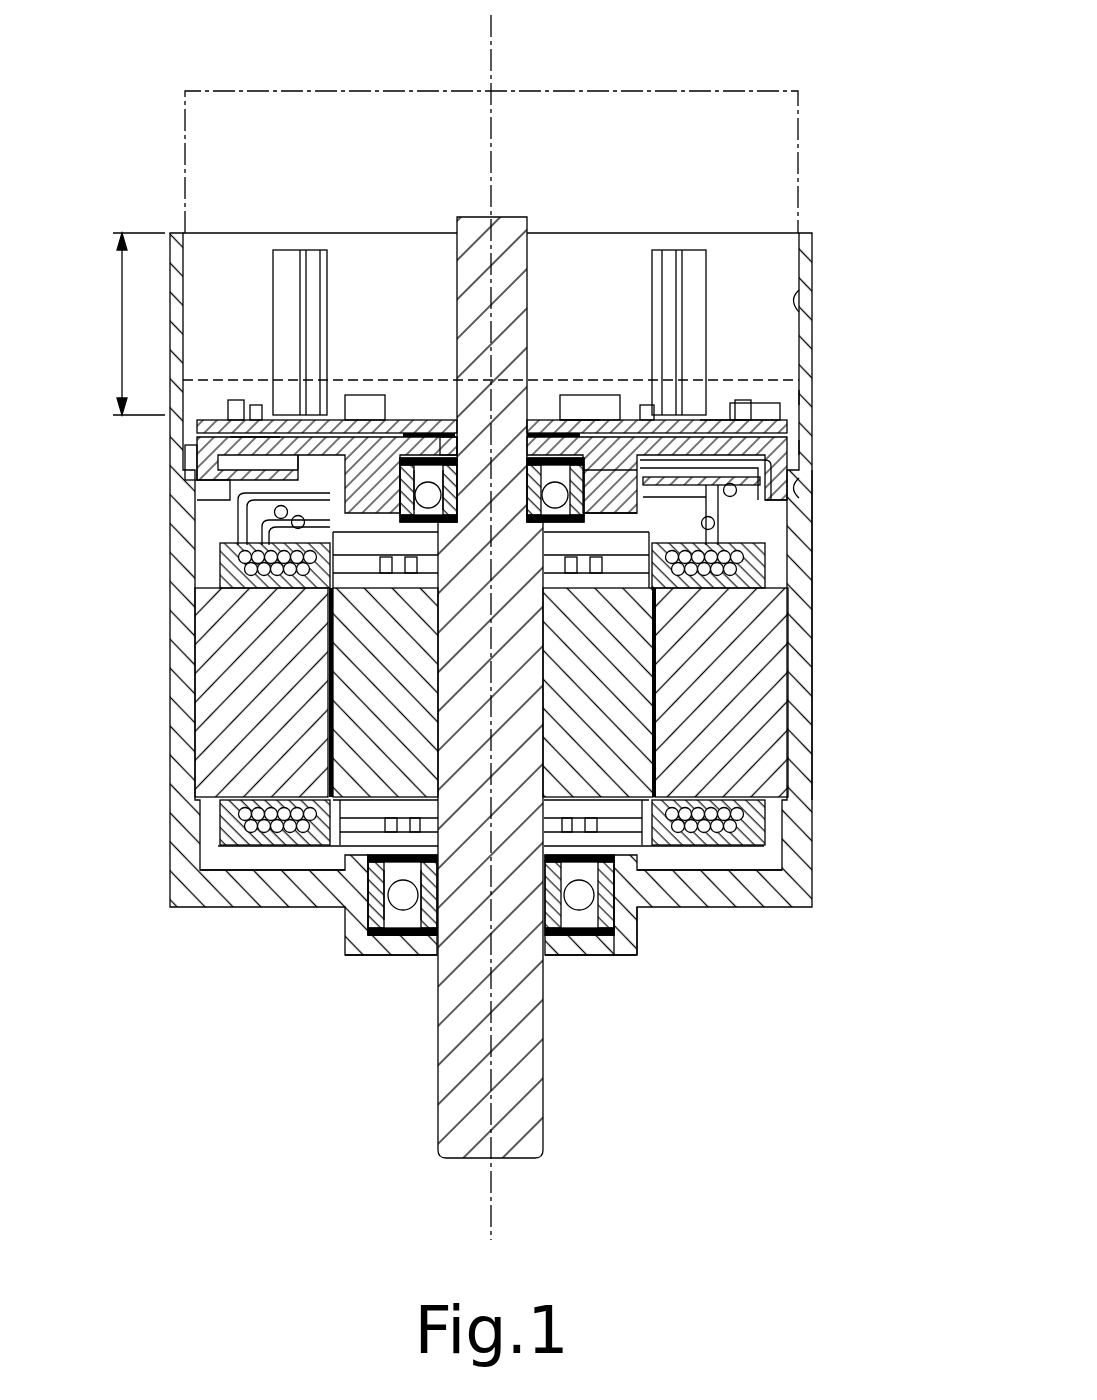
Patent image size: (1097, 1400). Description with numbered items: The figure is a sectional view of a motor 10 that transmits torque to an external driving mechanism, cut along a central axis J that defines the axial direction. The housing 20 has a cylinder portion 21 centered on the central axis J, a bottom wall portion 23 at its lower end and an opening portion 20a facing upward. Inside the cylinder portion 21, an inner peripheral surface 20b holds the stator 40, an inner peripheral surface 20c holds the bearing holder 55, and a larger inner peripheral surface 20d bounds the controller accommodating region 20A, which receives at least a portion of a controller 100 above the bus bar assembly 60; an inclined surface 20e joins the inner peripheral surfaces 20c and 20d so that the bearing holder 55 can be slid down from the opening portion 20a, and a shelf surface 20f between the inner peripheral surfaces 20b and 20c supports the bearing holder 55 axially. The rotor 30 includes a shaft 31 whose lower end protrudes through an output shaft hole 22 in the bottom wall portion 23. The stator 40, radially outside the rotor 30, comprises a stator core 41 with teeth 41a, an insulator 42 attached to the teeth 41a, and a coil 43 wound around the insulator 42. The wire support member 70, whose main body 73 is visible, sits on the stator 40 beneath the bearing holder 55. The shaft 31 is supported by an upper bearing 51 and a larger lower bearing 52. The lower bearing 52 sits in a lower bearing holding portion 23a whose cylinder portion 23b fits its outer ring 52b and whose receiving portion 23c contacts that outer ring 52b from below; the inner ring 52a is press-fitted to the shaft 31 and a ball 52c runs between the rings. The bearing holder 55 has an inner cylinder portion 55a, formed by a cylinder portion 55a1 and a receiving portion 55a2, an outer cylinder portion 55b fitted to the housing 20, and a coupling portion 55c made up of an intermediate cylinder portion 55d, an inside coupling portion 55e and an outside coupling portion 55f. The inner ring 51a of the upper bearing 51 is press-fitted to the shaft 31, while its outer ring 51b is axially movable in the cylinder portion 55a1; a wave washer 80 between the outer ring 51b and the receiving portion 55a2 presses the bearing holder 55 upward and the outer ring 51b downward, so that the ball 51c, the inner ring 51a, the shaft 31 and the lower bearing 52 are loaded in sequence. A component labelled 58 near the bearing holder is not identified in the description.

The central axis J is at (497, 50).
The controller 100 is at (745, 91).
The motor 10 is at (500, 637).
The housing 20 is at (548, 591).
The controller accommodating region 20A is at (115, 324).
The opening portion 20a is at (218, 233).
The inner peripheral surface 20b is at (790, 700).
The inner peripheral surface 20c is at (800, 448).
The inner peripheral surface 20d is at (802, 300).
The inclined surface 20e is at (806, 400).
The shelf surface 20f is at (800, 488).
The cylinder portion 21 is at (800, 640).
The output shaft hole 22 is at (405, 940).
The bottom wall portion 23 is at (760, 910).
The lower bearing holding portion 23a is at (650, 945).
The cylinder portion 23b is at (635, 920).
The receiving portion 23c is at (605, 925).
The rotor 30 is at (655, 705).
The shaft 31 is at (456, 268).
The stator 40 is at (488, 685).
The stator core 41 is at (210, 625).
The teeth 41a is at (300, 690).
The insulator 42 is at (240, 562).
The coil 43 is at (225, 550).
The upper bearing 51 is at (492, 453).
The inner ring 51a is at (450, 495).
The outer ring 51b is at (430, 540).
The ball 51c is at (448, 462).
The lower bearing 52 is at (432, 955).
The inner ring 52a is at (440, 935).
The outer ring 52b is at (370, 890).
The ball 52c is at (385, 930).
The bearing holder 55 is at (572, 405).
The inner cylinder portion 55a is at (590, 490).
The cylinder portion 55a1 is at (585, 520).
The receiving portion 55a2 is at (578, 420).
The outer cylinder portion 55b is at (780, 495).
The coupling portion 55c is at (720, 425).
The intermediate cylinder portion 55d is at (375, 470).
The inside coupling portion 55e is at (405, 470).
The outside coupling portion 55f is at (255, 445).
The circuit board with connectors 58 is at (200, 465).
The bus bar assembly 60 is at (770, 418).
The wire support member 70 is at (738, 508).
The main body 73 is at (190, 462).
The wave washer 80 is at (440, 440).